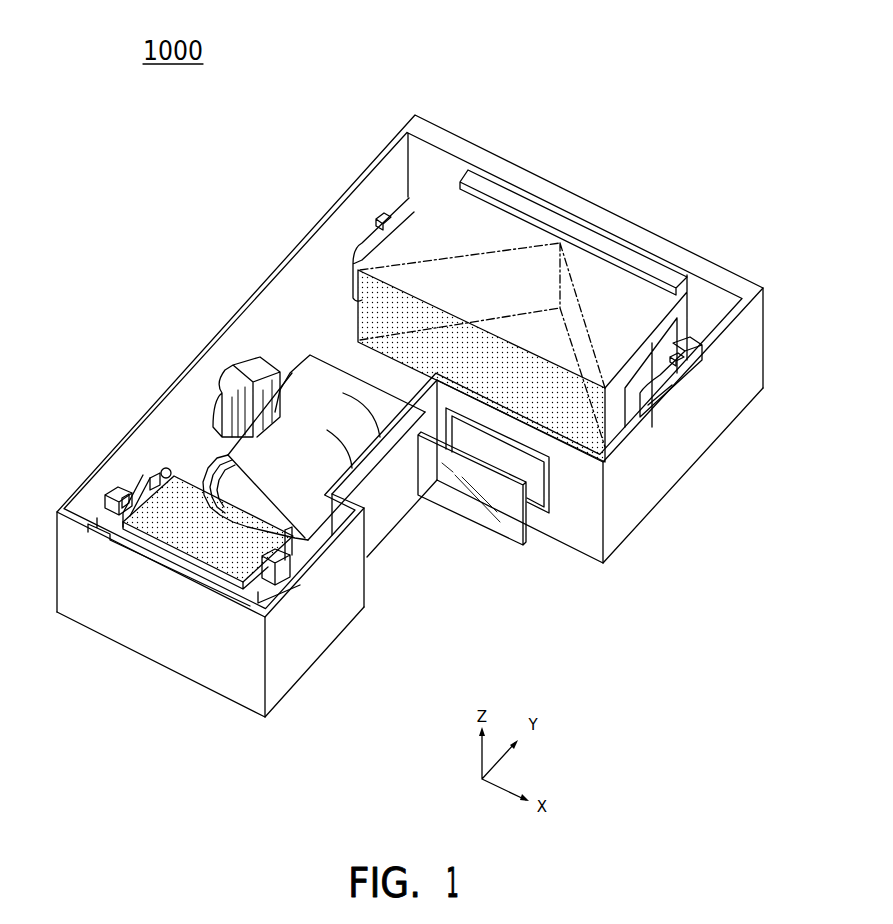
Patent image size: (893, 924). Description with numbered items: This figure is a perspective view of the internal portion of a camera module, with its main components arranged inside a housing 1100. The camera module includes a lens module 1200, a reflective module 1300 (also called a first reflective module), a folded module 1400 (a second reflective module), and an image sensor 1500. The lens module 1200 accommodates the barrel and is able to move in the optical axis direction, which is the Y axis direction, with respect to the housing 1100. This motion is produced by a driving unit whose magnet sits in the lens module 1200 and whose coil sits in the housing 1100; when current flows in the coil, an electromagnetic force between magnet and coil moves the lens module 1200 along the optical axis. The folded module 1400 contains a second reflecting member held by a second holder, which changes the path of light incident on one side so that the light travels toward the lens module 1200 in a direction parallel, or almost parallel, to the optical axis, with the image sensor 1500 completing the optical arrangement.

The housing 1100 is at (318, 227).
The lens module 1200 is at (303, 358).
The reflective module 1300 is at (447, 198).
The folded module 1400 is at (141, 460).
The image sensor 1500 is at (493, 548).